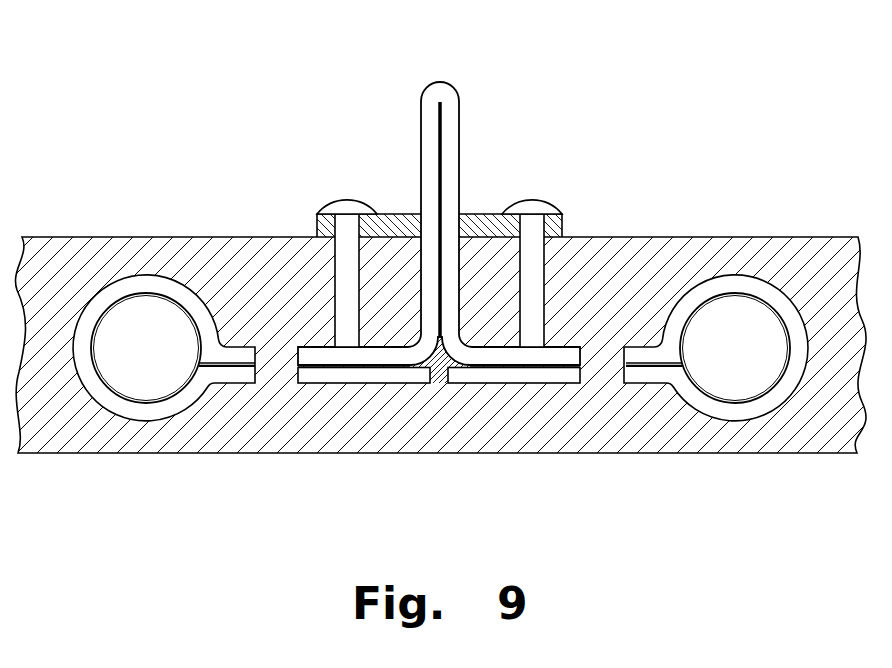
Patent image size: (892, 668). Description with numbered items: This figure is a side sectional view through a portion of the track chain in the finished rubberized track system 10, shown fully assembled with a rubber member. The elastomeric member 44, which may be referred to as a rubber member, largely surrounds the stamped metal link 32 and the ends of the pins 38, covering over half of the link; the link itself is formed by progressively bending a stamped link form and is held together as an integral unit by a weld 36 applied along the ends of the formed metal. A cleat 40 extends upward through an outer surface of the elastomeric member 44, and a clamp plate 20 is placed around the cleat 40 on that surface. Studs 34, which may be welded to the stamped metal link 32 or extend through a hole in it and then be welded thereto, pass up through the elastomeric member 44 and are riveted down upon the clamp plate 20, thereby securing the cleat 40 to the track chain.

The rubberized track system 10 is at (446, 272).
The clamp plate 20 is at (317, 228).
The stamped metal link 32 is at (676, 280).
The stud 34 is at (538, 200).
The weld 36 is at (440, 387).
The pin 38 is at (143, 375).
The cleat 40 is at (445, 82).
The elastomeric member 44 is at (77, 440).